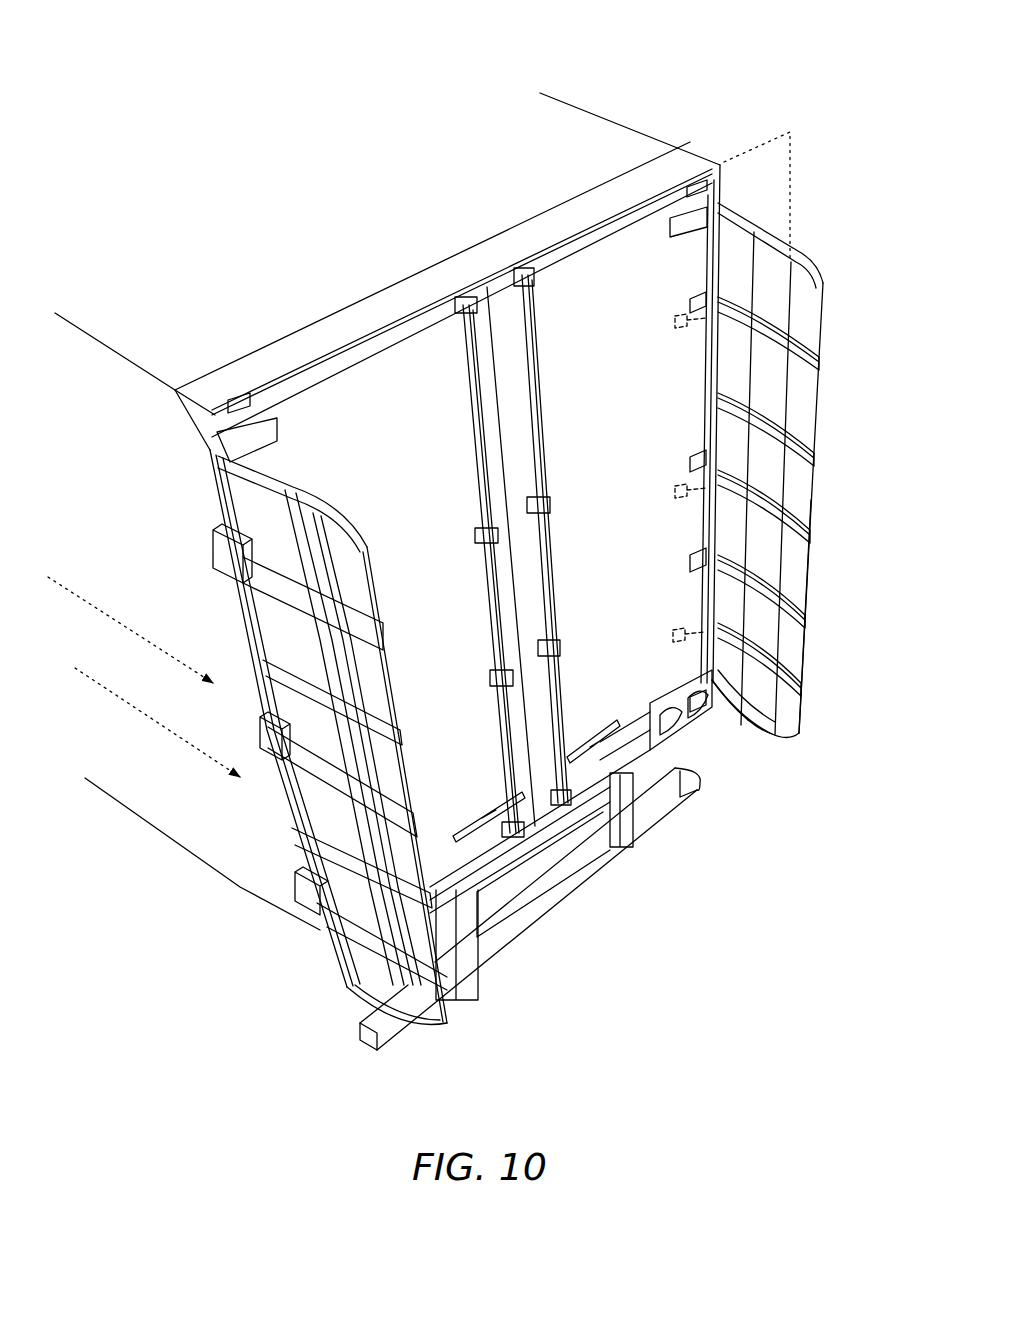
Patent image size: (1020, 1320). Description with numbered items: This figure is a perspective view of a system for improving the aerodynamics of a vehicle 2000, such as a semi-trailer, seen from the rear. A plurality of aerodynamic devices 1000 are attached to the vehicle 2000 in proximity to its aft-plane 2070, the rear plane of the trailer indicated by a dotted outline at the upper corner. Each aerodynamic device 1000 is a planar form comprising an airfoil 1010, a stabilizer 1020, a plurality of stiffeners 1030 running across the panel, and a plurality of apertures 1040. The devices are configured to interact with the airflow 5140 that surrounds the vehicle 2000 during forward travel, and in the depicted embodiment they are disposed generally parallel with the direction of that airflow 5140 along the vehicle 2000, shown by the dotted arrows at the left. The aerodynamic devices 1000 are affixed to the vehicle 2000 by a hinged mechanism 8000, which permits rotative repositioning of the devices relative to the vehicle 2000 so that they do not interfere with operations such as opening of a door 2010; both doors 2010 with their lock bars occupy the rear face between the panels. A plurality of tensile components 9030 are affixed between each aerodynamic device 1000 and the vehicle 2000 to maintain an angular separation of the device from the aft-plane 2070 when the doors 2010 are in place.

The vehicle 2000 is at (668, 66).
The door 2010 is at (618, 302).
The aft-plane 2070 is at (784, 128).
The aerodynamic device 1000 is at (802, 236).
The airfoil 1010 is at (731, 686).
The stabilizer 1020 is at (789, 708).
The stiffeners 1030 is at (806, 607).
The apertures 1040 is at (764, 710).
The hinged mechanism 8000 is at (227, 562).
The tensile components 9030 is at (690, 329).
The airflow 5140 is at (121, 626).